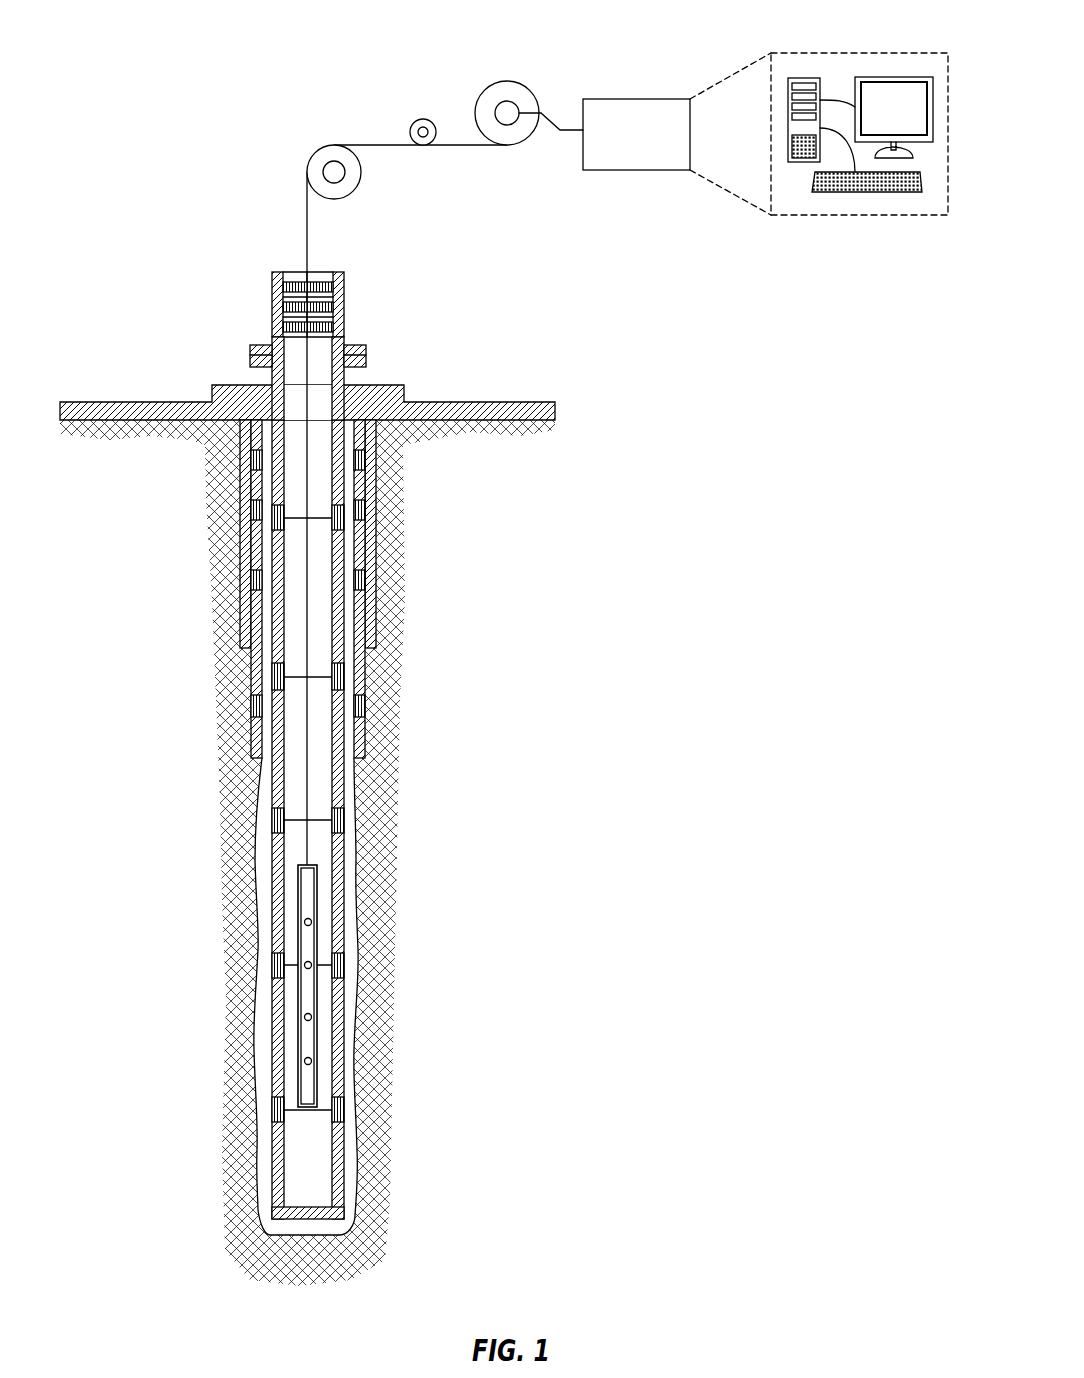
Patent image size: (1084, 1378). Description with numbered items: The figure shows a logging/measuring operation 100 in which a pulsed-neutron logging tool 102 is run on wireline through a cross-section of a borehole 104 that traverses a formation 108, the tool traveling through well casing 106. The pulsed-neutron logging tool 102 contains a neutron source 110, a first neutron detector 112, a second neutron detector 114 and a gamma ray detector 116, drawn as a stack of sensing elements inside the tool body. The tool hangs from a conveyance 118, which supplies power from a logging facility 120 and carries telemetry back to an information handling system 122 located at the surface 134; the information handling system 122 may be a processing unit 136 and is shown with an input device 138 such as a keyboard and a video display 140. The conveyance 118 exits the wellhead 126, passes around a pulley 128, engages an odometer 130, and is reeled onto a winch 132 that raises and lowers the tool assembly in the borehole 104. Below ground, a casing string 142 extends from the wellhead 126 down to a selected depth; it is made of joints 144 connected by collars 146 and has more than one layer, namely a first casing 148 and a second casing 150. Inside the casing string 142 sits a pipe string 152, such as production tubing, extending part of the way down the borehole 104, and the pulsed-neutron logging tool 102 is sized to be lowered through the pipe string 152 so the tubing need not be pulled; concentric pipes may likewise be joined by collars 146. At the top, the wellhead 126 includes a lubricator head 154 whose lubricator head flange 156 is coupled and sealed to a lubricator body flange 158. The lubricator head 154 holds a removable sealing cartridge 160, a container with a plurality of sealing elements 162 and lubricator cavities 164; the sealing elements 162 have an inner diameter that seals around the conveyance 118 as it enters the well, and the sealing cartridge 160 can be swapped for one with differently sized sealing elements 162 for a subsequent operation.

The logging/measuring operation 100 is at (706, 1080).
The pulsed-neutron logging tool 102 is at (290, 994).
The borehole 104 is at (208, 810).
The well casing 106 is at (357, 765).
The formation 108 is at (550, 687).
The neutron source 110 is at (312, 922).
The first neutron detector 112 is at (312, 965).
The second neutron detector 114 is at (312, 1017).
The gamma ray detector 116 is at (312, 1061).
The conveyance 118 is at (311, 245).
The logging facility 120 is at (819, 132).
The information handling system 122 is at (647, 99).
The wellhead 126 is at (384, 330).
The pulley 128 is at (307, 157).
The odometer 130 is at (424, 119).
The winch 132 is at (521, 83).
The surface 134 is at (108, 400).
The processing unit 136 is at (803, 78).
The input device 138 is at (865, 193).
The video display 140 is at (893, 77).
The casing string 142 is at (228, 637).
The joint 144 is at (252, 669).
The collar 146 is at (251, 708).
The first casing 148 is at (362, 674).
The second casing 150 is at (367, 622).
The pipe string 152 is at (345, 1178).
The lubricator head 154 is at (376, 362).
The lubricator head flange 156 is at (367, 356).
The lubricator body flange 158 is at (367, 365).
The sealing cartridge 160 is at (326, 271).
The sealing elements 162 is at (331, 306).
The lubricator cavities 164 is at (316, 320).